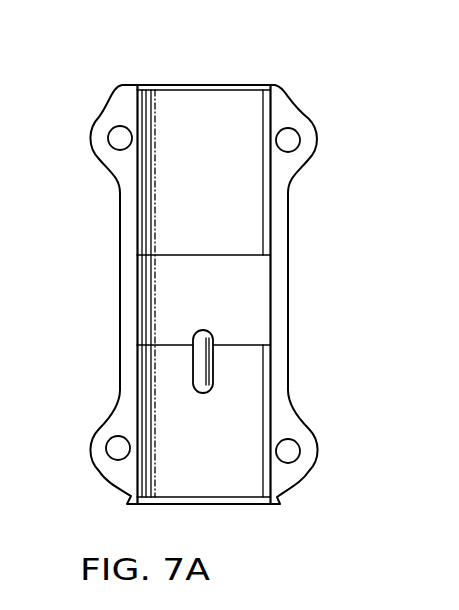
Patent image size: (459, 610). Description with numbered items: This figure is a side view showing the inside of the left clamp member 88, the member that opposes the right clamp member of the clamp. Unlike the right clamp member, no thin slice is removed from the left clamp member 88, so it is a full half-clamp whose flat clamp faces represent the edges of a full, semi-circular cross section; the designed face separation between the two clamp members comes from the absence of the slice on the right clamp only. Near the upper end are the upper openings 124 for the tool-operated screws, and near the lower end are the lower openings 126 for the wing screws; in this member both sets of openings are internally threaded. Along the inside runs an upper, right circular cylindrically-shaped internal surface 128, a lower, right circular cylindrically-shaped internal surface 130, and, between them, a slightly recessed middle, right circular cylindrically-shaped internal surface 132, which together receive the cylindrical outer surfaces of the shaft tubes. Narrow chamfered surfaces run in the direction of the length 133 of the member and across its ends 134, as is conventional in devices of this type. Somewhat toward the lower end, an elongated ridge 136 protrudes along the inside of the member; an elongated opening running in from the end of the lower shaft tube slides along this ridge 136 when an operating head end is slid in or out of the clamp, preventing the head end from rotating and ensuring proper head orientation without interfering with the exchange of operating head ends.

The left clamp member 88 is at (112, 103).
The upper openings 124 is at (285, 145).
The lower openings 126 is at (118, 448).
The upper right circular cylindrically-shaped internal surface 128 is at (217, 142).
The lower right circular cylindrically-shaped internal surface 130 is at (205, 438).
The recessed middle right circular cylindrically-shaped internal surface 132 is at (228, 310).
The narrow chamfered surfaces running lengthwise 133 is at (143, 212).
The narrow chamfered surfaces at the ends 134 is at (217, 87).
The elongated ridge 136 is at (200, 378).